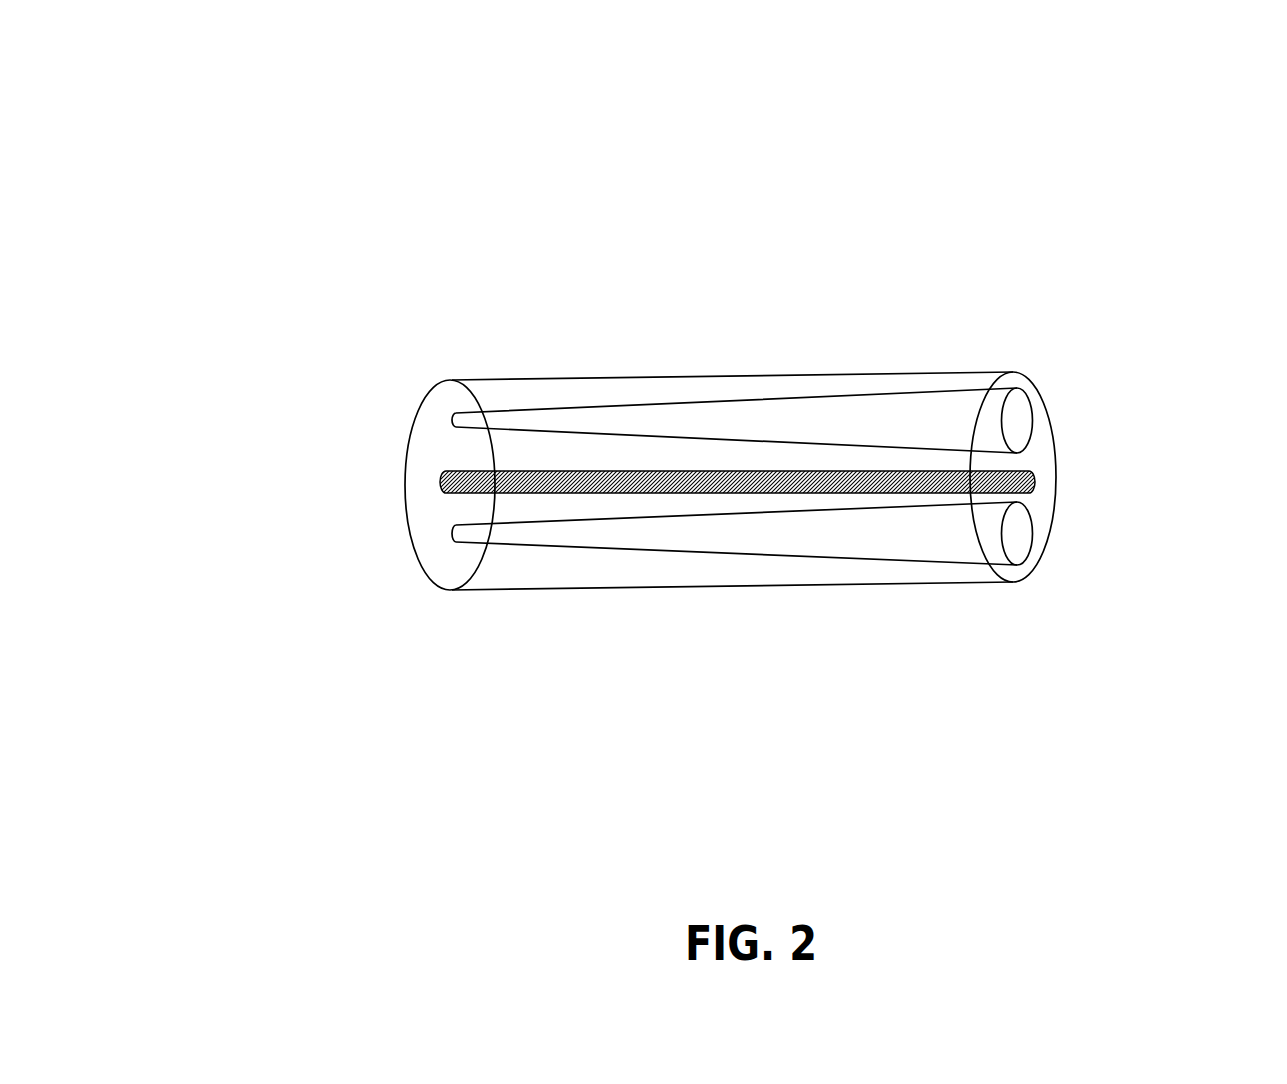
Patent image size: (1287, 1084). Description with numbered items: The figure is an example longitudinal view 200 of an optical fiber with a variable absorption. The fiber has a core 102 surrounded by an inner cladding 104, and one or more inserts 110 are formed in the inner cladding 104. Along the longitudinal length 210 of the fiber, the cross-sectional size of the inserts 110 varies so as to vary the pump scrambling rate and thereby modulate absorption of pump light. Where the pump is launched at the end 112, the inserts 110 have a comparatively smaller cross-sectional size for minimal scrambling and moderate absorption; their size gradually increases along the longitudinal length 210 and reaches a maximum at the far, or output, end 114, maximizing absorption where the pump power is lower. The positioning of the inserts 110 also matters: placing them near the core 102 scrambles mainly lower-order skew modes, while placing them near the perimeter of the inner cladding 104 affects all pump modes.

The longitudinal view 200 is at (256, 58).
The core 102 is at (1033, 482).
The inner cladding 104 is at (432, 541).
The inserts 110 is at (1018, 418).
The end 112 is at (394, 407).
The far end 114 is at (1069, 371).
The longitudinal length 210 is at (1020, 357).